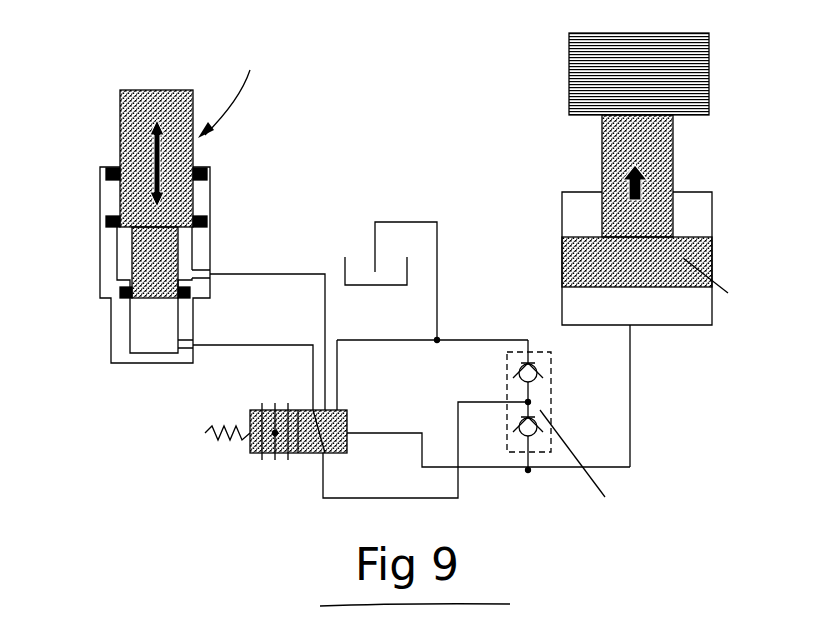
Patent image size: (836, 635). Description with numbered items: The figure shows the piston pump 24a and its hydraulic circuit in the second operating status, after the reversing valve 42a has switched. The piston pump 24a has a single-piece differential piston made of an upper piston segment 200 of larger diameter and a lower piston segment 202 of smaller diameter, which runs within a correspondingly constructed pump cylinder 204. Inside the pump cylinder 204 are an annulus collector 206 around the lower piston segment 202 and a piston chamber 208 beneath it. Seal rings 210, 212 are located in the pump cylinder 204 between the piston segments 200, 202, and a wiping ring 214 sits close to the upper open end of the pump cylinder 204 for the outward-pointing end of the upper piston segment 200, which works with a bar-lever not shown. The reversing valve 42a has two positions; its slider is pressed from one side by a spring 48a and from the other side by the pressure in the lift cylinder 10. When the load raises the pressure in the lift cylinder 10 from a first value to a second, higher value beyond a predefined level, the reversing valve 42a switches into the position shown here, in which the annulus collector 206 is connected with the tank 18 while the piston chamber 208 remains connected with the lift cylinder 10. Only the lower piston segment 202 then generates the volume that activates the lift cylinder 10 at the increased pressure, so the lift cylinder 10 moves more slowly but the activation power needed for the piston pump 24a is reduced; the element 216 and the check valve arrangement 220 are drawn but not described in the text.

The lift cylinder 10 is at (680, 325).
The tank 18 is at (357, 265).
The piston pump 24a is at (203, 93).
The reversing valve 42a is at (275, 433).
The spring 48a is at (204, 433).
The upper piston segment 200 is at (137, 123).
The lower piston segment 202 is at (152, 292).
The pump cylinder 204 is at (205, 203).
The annulus collector 206 is at (185, 270).
The piston chamber 208 is at (162, 342).
The seal ring 210 is at (108, 228).
The seal ring 212 is at (120, 290).
The wiping ring 214 is at (108, 182).
The load / mass 216 is at (683, 87).
The check valve arrangement 220 is at (535, 437).